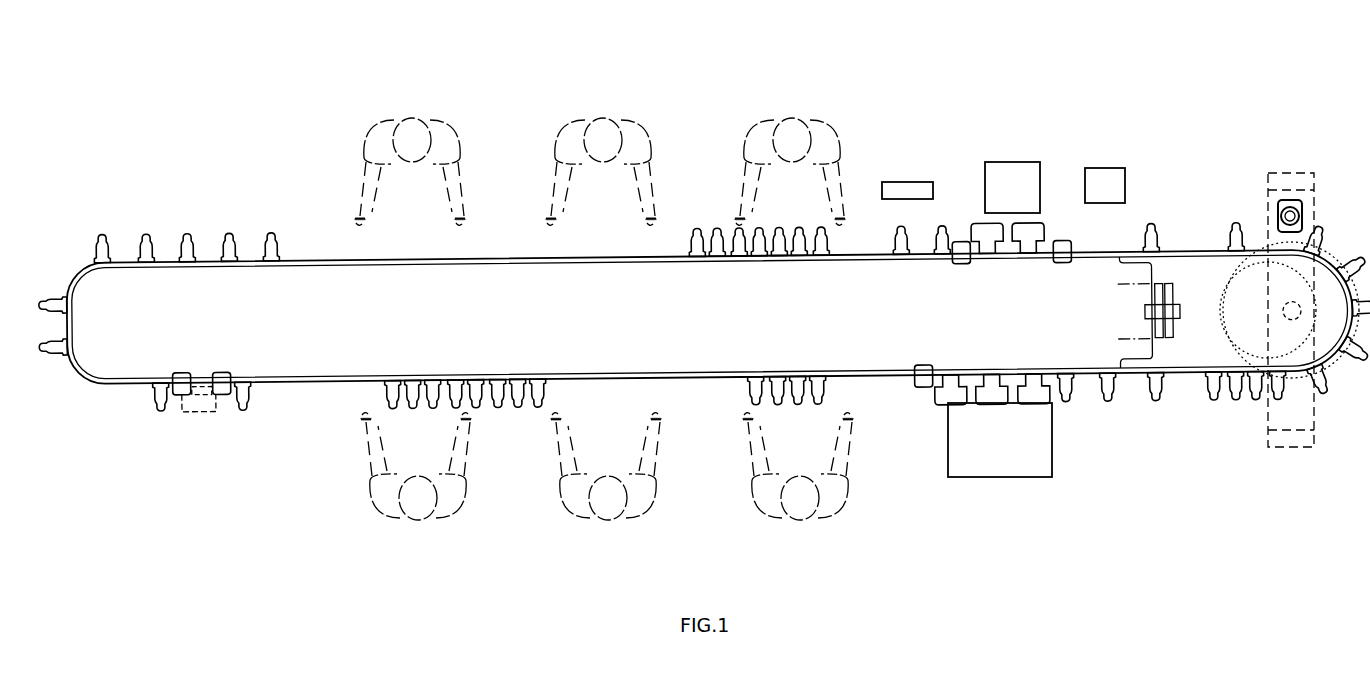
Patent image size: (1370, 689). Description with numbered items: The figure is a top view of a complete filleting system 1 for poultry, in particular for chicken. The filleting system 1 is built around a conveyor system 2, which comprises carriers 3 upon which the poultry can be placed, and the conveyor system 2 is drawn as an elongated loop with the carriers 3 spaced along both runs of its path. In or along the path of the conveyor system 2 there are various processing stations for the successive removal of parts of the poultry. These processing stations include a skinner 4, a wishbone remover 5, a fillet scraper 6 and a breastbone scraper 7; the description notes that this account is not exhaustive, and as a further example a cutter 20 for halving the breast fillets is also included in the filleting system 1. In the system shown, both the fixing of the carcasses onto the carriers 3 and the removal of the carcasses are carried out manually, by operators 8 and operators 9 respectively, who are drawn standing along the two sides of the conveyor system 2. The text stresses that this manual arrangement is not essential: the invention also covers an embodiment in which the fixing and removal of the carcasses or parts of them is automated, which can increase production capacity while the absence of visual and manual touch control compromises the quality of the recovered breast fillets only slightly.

The filleting system 1 is at (253, 462).
The conveyor system 2 is at (331, 384).
The carriers 3 is at (517, 408).
The skinner 4 is at (995, 458).
The wishbone remover 5 is at (1355, 358).
The fillet scraper 6 is at (1289, 310).
The breastbone scraper 7 is at (905, 188).
The operators 8 is at (752, 518).
The operators 9 is at (736, 111).
The cutter 20 is at (1009, 173).